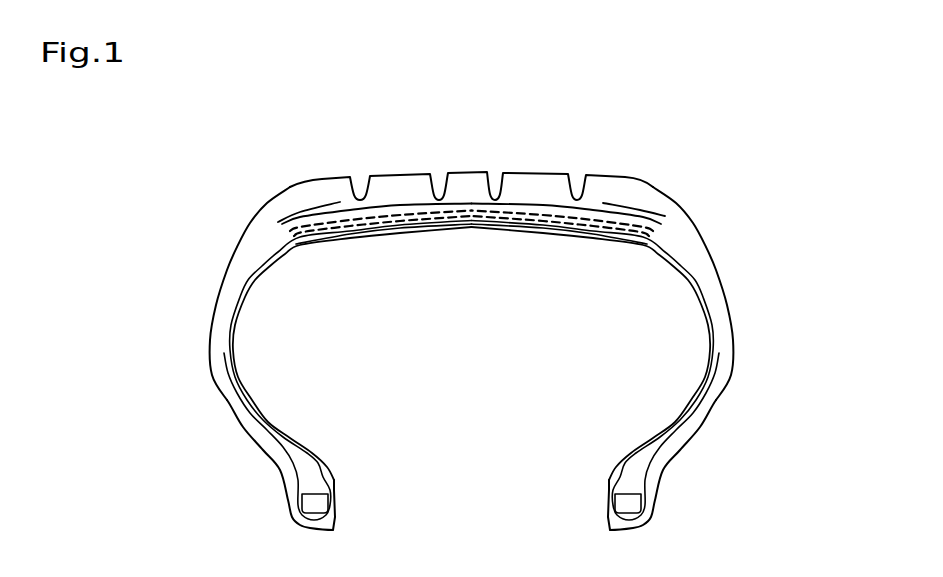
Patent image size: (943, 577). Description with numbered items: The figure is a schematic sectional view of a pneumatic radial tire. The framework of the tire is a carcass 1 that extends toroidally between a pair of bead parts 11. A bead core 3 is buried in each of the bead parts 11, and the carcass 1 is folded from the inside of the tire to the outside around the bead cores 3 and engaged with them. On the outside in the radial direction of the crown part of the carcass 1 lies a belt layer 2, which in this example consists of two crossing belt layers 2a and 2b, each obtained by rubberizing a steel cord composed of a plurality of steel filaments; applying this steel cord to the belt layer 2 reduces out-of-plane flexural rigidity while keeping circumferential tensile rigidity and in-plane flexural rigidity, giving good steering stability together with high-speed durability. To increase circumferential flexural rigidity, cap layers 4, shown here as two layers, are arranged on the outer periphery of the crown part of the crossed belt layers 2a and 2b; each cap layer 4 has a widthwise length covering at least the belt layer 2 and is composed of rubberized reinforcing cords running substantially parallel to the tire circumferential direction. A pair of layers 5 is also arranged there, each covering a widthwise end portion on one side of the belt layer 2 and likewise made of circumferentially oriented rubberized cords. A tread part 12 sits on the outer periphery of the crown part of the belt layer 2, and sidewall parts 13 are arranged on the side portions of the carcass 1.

The carcass 1 is at (705, 291).
The belt layer 2 is at (471, 152).
The crossing belt layer 2a is at (393, 213).
The crossing belt layer 2b is at (382, 215).
The bead core 3 is at (635, 498).
The cap layer 4 is at (531, 210).
The layer 5 is at (645, 213).
The bead part 11 is at (665, 468).
The tread part 12 is at (467, 174).
The sidewall part 13 is at (728, 302).